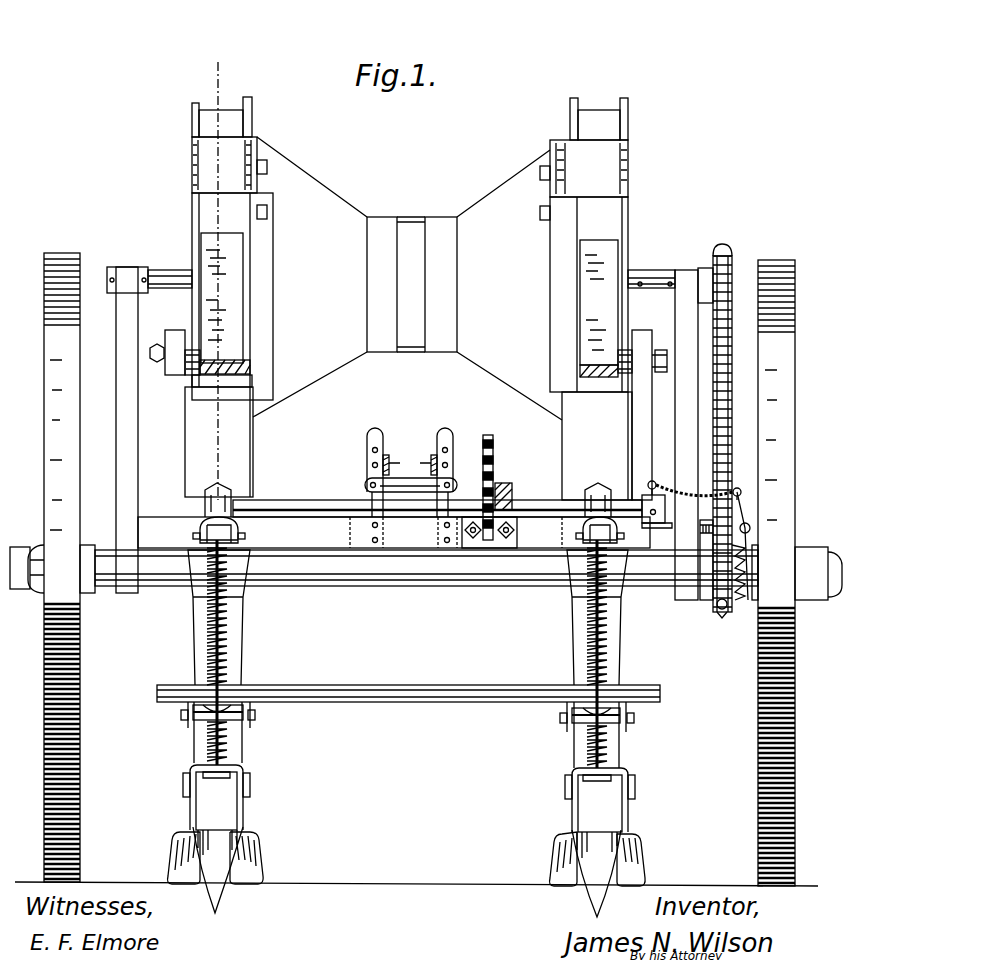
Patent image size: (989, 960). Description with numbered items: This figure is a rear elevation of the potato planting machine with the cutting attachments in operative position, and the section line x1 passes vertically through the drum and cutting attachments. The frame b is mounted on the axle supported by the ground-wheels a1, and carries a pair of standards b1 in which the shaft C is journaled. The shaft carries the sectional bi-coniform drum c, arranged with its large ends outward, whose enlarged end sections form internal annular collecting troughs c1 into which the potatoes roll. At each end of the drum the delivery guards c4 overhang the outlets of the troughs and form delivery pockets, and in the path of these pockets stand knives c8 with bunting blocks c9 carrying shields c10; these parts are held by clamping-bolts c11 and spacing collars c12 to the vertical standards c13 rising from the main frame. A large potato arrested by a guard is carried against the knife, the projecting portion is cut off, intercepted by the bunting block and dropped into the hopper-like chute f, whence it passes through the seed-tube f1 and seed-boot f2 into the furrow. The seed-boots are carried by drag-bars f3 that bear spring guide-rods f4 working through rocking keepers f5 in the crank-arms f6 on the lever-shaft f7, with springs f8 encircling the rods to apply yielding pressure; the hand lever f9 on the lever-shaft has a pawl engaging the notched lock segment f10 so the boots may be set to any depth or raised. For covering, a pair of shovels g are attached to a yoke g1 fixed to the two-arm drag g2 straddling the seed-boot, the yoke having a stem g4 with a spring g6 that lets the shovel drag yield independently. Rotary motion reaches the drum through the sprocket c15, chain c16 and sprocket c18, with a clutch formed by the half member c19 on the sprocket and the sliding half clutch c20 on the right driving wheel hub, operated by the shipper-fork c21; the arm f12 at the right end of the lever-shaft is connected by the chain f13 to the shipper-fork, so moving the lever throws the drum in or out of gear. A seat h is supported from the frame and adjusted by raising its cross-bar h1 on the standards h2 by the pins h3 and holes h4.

The section line X' X' x1 is at (222, 272).
The ground-wheels a1 is at (80, 668).
The standards b1 is at (118, 368).
The shaft C is at (163, 283).
The collecting troughs c1 is at (238, 124).
The delivery guards c4 is at (238, 158).
The shields c10 is at (232, 292).
The bunting blocks c9 is at (240, 358).
The knives c8 is at (252, 381).
The spacing collars c12 is at (186, 365).
The clamping-bolts c11 is at (158, 356).
The vertical standards c13 is at (178, 437).
The sectional bi-coniform drum c is at (338, 210).
The hopper-like chute f is at (240, 460).
The standards h2 is at (375, 430).
The holes h4 is at (372, 465).
The seat h is at (392, 462).
The pins h3 is at (370, 485).
The cross-bar h1 is at (416, 495).
The notched lock segment f10 is at (494, 452).
The spring pawl hand lever f9 is at (510, 486).
The lever-shaft f7 is at (296, 502).
The frame b is at (394, 532).
The crank-arms f6 is at (238, 498).
The rocking keepers f5 is at (238, 533).
The spring guide-rods f4 is at (196, 540).
The springs f8 is at (206, 616).
The seed-tube f1 is at (243, 652).
The drag-bars f3 is at (188, 724).
The spring g6 is at (207, 742).
The stem g4 is at (222, 770).
The seed-boots f2 is at (409, 802).
The two-arm drag g2 is at (184, 788).
The yoke g1 is at (200, 824).
The shovels g is at (172, 858).
The arm f12 is at (650, 495).
The chain f13 is at (655, 480).
The chain c16 is at (733, 382).
The sprocket c15 is at (733, 258).
The shipper-fork c21 is at (750, 522).
The clutch half member c19 is at (740, 600).
The sliding half clutch c20 is at (755, 598).
The sprocket c18 is at (722, 614).